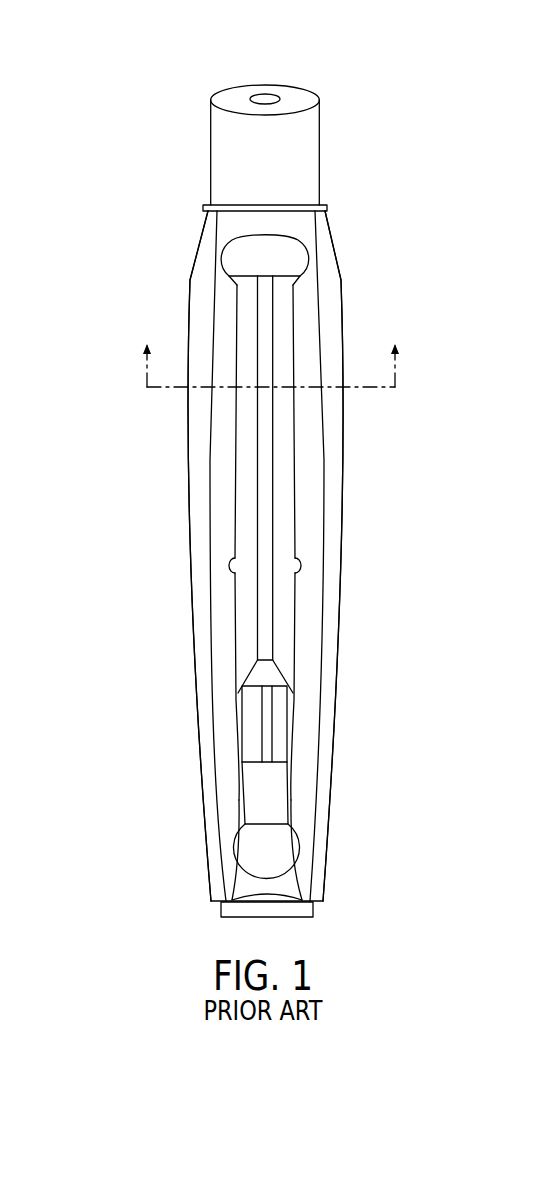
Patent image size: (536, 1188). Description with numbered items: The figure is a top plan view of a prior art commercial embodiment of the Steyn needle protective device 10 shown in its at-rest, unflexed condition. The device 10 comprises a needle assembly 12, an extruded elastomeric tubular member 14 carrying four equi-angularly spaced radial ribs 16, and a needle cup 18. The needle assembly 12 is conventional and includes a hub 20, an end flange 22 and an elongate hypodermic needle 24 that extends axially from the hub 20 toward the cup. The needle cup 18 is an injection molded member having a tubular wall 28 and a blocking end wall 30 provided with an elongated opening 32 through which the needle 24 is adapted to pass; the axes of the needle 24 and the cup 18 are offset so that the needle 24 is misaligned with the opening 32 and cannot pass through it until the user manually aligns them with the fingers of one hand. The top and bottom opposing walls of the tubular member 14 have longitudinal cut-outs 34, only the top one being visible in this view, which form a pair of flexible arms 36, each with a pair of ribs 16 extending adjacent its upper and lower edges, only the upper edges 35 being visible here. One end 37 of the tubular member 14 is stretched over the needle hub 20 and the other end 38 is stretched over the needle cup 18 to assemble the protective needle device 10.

The needle protective device 10 is at (84, 363).
The needle assembly 12 is at (278, 657).
The tubular member 14 is at (212, 525).
The radial ribs 16 is at (337, 432).
The needle cup 18 is at (181, 90).
The hub 20 is at (277, 783).
The end flange 22 is at (315, 908).
The hypodermic needle 24 is at (274, 502).
The tubular wall 28 is at (310, 168).
The blocking end wall 30 is at (303, 98).
The elongated opening 32 is at (262, 98).
The longitudinal cut-outs 34 is at (283, 365).
The upper edges 35 is at (236, 599).
The flexible arms 36 is at (349, 553).
The one end of tubular member 37 is at (238, 885).
The other end of tubular member 38 is at (302, 235).